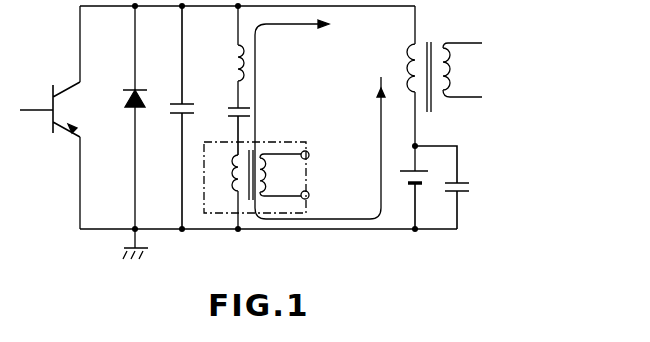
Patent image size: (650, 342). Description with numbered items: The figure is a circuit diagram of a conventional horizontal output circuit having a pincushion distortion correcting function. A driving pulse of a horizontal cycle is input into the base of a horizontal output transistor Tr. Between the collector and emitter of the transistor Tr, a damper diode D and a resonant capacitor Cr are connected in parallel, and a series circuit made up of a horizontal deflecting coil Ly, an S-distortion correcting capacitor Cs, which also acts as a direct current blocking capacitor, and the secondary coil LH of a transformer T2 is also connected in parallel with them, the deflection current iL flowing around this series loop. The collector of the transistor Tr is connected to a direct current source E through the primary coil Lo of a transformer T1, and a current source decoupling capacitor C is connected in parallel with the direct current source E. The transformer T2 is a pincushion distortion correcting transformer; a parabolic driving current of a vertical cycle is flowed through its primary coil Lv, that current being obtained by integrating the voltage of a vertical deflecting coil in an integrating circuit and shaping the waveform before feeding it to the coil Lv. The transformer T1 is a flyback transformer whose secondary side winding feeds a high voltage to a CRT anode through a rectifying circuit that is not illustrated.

The horizontal output transistor Tr is at (54, 109).
The damper diode D is at (128, 117).
The resonant capacitor Cr is at (175, 117).
The horizontal deflecting coil Ly is at (226, 57).
The S-distortion correcting capacitor Cs is at (228, 131).
The deflection current iL is at (320, 117).
The pincushion distortion correcting transformer T2 is at (290, 140).
The secondary coil of transformer T2 LH is at (225, 192).
The primary coil of transformer T2 Lv is at (284, 175).
The primary coil of transformer T1 Lo is at (392, 88).
The flyback transformer T1 is at (427, 35).
The direct current source E is at (408, 200).
The current source decoupling capacitor C is at (448, 187).